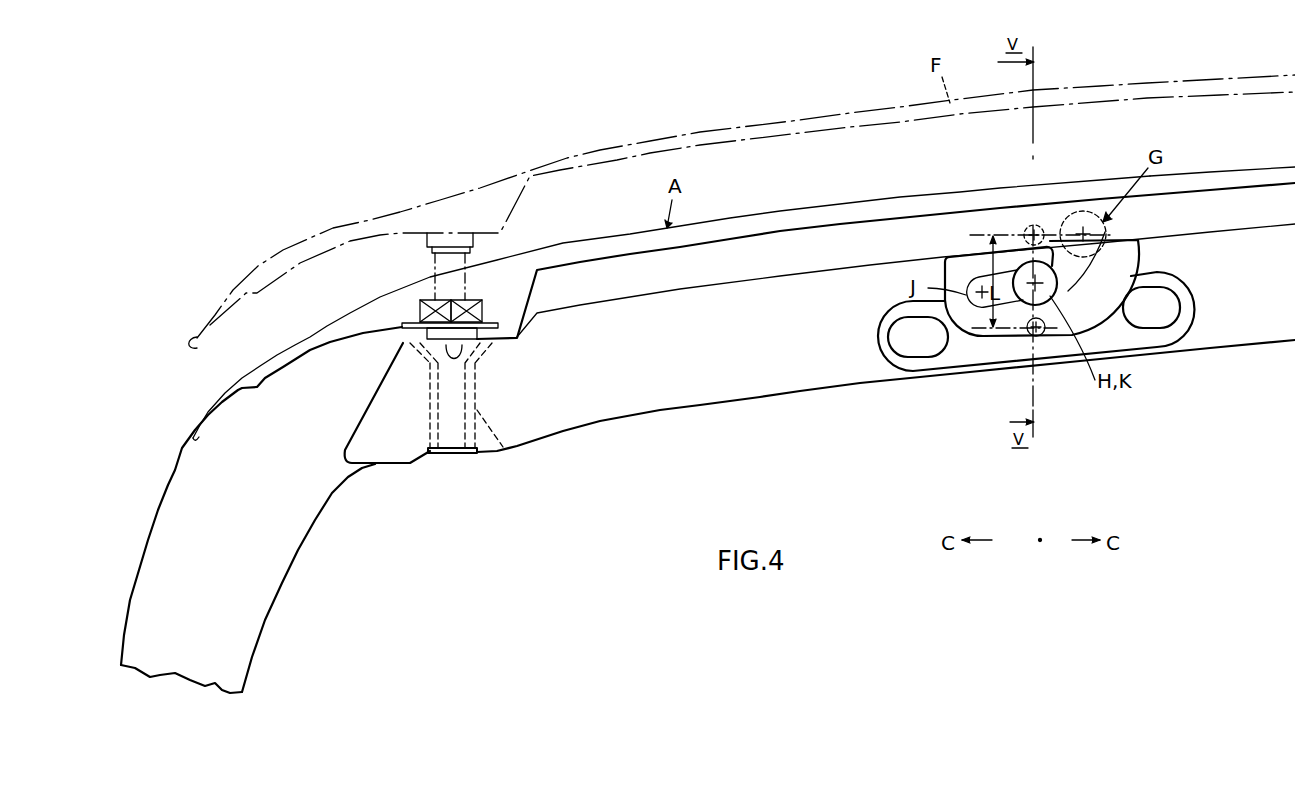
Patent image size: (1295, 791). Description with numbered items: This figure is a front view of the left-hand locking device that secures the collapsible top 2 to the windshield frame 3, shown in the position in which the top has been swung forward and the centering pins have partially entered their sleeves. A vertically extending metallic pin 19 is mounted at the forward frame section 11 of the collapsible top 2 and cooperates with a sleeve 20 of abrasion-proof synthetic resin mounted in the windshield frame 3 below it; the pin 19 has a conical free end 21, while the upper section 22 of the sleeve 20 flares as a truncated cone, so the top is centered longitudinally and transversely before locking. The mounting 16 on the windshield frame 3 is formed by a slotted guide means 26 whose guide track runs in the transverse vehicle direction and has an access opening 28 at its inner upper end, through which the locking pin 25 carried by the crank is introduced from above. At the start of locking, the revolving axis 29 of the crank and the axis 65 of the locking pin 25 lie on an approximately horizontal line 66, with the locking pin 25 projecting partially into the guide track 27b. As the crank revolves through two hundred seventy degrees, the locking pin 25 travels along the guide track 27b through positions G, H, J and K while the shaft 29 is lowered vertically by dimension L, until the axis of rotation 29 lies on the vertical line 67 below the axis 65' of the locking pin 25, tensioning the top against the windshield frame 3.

The collapsible top 2 is at (879, 199).
The windshield frame 3 is at (1269, 166).
The forward frame section 11 is at (759, 220).
The mounting 16 is at (982, 372).
The pin 19 is at (450, 427).
The sleeve 20 is at (507, 450).
The free end 21 is at (470, 453).
The upper section 22 is at (410, 357).
The locking pin 25 is at (1093, 213).
The slotted guide means 26 is at (1146, 258).
The guide track 27b is at (1072, 293).
The access opening 28 is at (1114, 240).
The revolving axis of the crank 29 is at (1031, 230).
The axis of the locking pin 65 is at (1067, 194).
The axis of the locking pin 65' is at (1065, 276).
The horizontal line 66 is at (1003, 234).
The vertical line 67 is at (1036, 378).